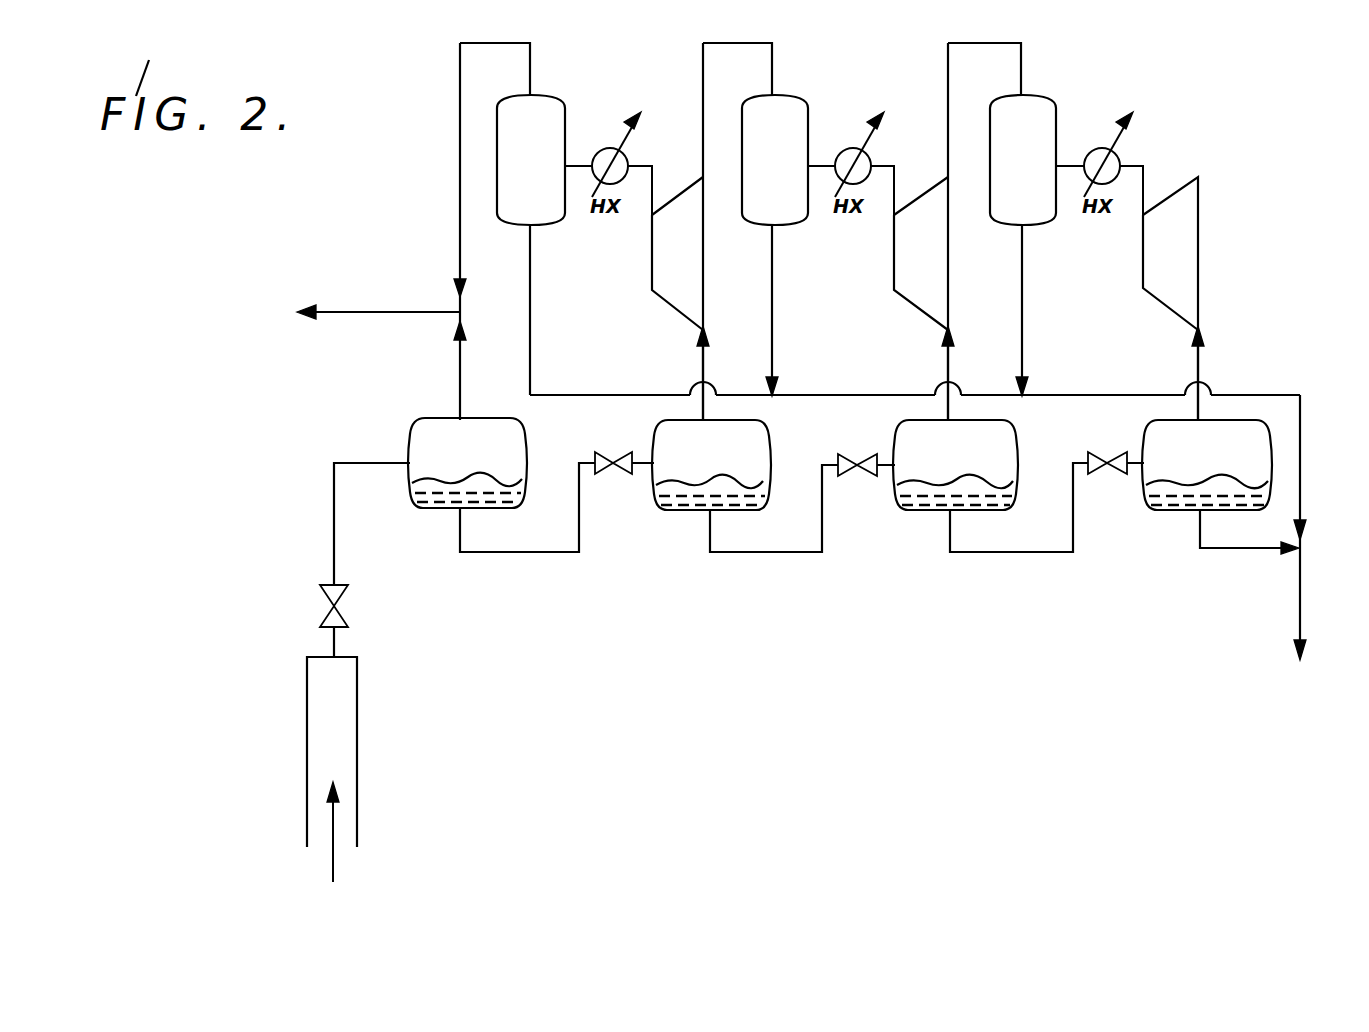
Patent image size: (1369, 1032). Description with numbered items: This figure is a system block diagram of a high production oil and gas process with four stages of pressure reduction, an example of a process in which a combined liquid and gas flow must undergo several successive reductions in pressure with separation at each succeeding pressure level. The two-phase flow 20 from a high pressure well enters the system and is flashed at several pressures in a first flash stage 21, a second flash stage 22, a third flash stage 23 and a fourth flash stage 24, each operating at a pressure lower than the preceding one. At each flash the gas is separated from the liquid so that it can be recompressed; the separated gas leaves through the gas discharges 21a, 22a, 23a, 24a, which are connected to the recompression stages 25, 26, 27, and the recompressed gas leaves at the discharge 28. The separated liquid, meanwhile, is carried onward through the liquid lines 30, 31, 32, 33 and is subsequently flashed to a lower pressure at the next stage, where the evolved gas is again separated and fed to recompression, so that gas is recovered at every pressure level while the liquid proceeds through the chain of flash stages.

The two-phase flow 20 is at (334, 517).
The first flash stage 21 is at (408, 440).
The second flash stage 22 is at (673, 508).
The third flash stage 23 is at (913, 510).
The fourth flash stage 24 is at (1172, 508).
The gas discharge 21a is at (460, 373).
The gas discharge 22a is at (703, 364).
The gas discharge 23a is at (948, 364).
The gas discharge 24a is at (1198, 364).
The recompression stage 25 is at (645, 262).
The recompression stage 26 is at (888, 267).
The recompression stage 27 is at (1135, 264).
The discharge 28 is at (1273, 393).
The liquid line 30 is at (480, 553).
The liquid line 31 is at (752, 553).
The liquid line 32 is at (987, 553).
The liquid line 33 is at (1233, 553).